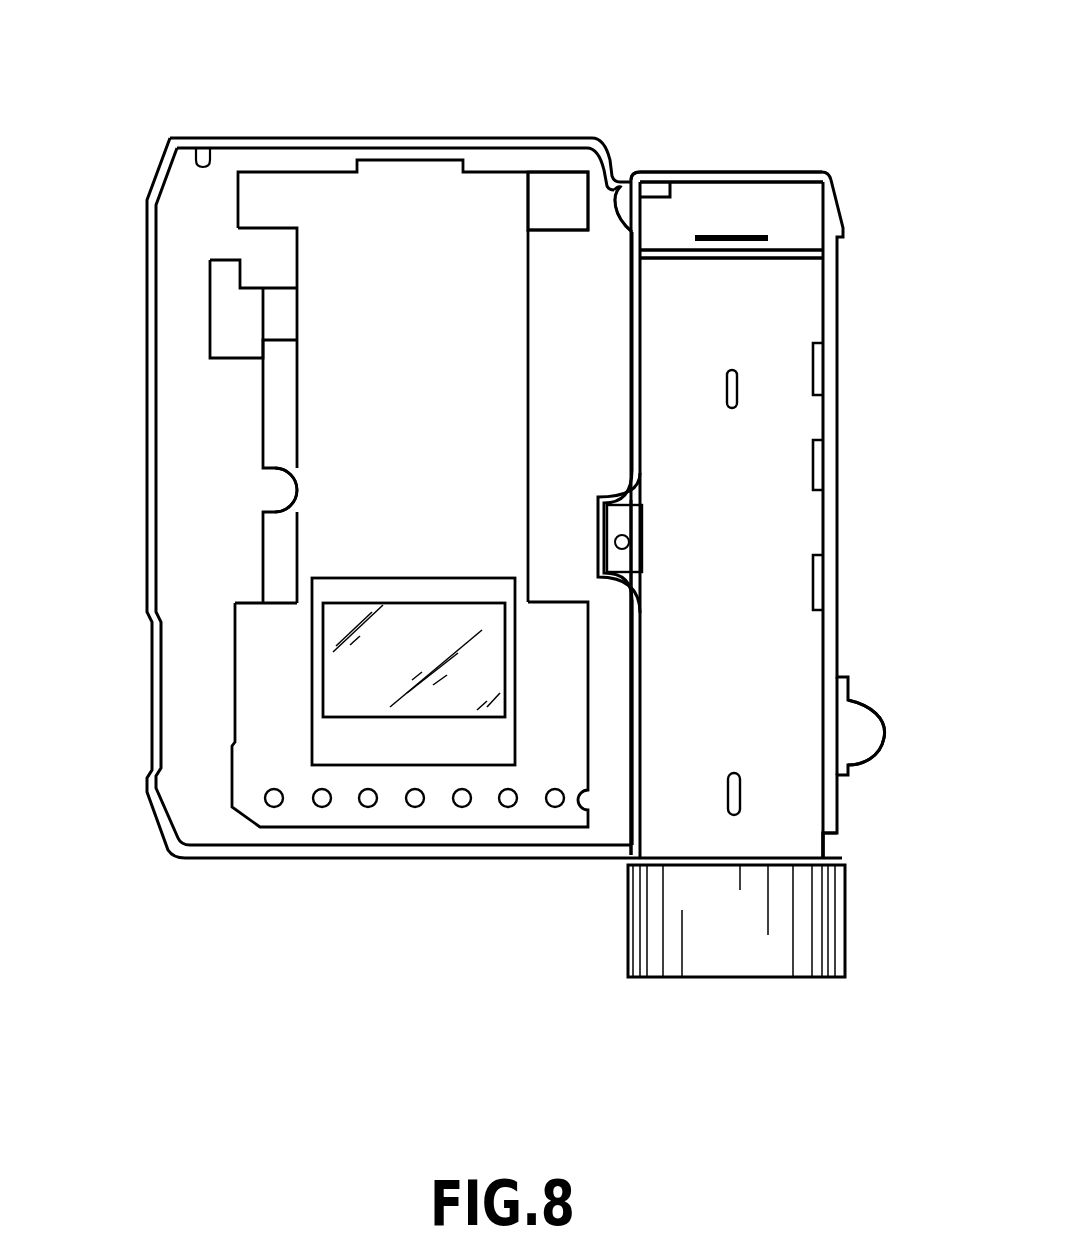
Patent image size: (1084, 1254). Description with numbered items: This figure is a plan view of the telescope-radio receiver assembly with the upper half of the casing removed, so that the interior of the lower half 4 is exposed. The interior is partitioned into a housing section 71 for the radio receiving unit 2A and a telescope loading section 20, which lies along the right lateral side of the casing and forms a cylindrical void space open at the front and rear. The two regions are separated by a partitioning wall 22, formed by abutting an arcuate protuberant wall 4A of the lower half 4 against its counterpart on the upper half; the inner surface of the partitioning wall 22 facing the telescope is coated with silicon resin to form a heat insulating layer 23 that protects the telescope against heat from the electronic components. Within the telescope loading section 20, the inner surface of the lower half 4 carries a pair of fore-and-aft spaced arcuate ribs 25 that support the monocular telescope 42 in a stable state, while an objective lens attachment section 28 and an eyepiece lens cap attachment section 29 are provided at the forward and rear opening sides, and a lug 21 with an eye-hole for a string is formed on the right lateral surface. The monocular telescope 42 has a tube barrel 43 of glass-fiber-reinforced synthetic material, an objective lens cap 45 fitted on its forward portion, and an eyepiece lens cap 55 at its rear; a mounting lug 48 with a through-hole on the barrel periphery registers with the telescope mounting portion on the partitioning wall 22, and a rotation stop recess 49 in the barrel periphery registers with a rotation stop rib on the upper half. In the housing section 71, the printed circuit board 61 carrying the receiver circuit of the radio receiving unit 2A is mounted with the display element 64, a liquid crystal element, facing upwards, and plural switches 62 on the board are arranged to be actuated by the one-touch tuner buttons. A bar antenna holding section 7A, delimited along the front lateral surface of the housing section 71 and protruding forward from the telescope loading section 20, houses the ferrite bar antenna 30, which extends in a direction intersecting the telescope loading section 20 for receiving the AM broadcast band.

The lower half 4 is at (145, 296).
The arcuate protuberant wall 4A is at (633, 722).
The bar antenna holding section 7A is at (200, 163).
The radio receiving unit 2A is at (292, 529).
The telescope loading section 20 is at (798, 542).
The lug 21 is at (850, 715).
The partitioning wall 22 is at (622, 210).
The heat insulating layer 23 is at (645, 795).
The arcuate ribs 25 is at (835, 360).
The objective lens attachment section 28 is at (827, 253).
The eyepiece lens cap attachment section 29 is at (825, 847).
The ferrite bar antenna 30 is at (546, 185).
The monocular telescope 42 is at (790, 738).
The tube barrel 43 is at (810, 495).
The objective lens cap 45 is at (807, 210).
The mounting lug 48 is at (640, 520).
The rotation stop recess 49 is at (735, 395).
The eyepiece lens cap 55 is at (820, 930).
The printed circuit board 61 is at (252, 790).
The switches 62 is at (322, 806).
The display element 64 is at (340, 630).
The housing section 71 is at (197, 442).